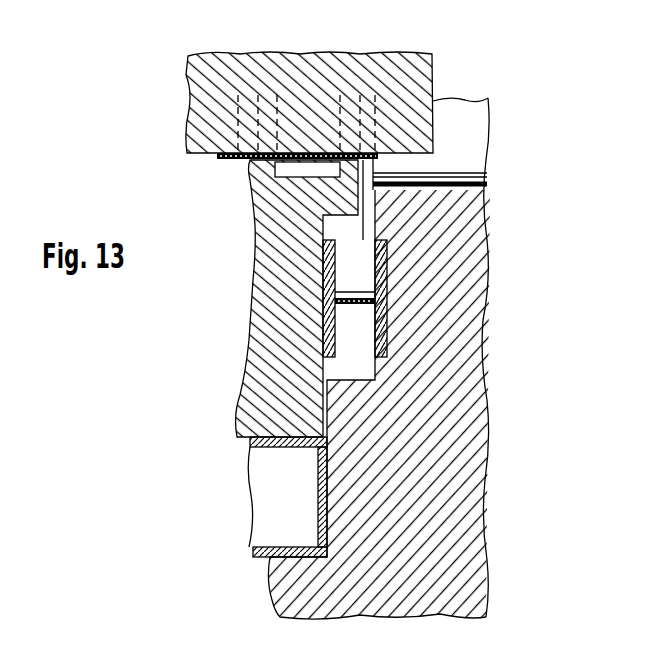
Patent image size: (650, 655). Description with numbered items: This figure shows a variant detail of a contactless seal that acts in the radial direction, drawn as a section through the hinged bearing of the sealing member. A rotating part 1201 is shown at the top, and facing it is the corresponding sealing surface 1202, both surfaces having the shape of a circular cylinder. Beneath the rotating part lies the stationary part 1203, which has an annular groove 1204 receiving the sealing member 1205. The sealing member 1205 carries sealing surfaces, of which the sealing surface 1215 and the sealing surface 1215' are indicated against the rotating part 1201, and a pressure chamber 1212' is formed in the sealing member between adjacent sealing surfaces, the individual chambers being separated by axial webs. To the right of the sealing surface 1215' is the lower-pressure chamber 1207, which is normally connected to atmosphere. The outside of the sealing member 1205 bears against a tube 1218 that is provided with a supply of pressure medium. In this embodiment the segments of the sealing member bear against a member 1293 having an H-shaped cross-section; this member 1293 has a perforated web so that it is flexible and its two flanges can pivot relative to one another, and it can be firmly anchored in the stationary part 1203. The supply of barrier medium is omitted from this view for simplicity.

The rotating part 1201 is at (322, 55).
The sealing surface 1215 is at (281, 122).
The sealing surface 1215' is at (378, 112).
The lower-pressure chamber 1207 is at (398, 163).
The pressure chamber 1212' is at (286, 179).
The sealing surface 1202 is at (380, 203).
The stationary part 1203 is at (482, 254).
The sealing member 1205 is at (252, 306).
The member having an H-shaped cross-section 1293 is at (355, 306).
The annular groove 1204 is at (322, 422).
The tube 1218 is at (267, 558).